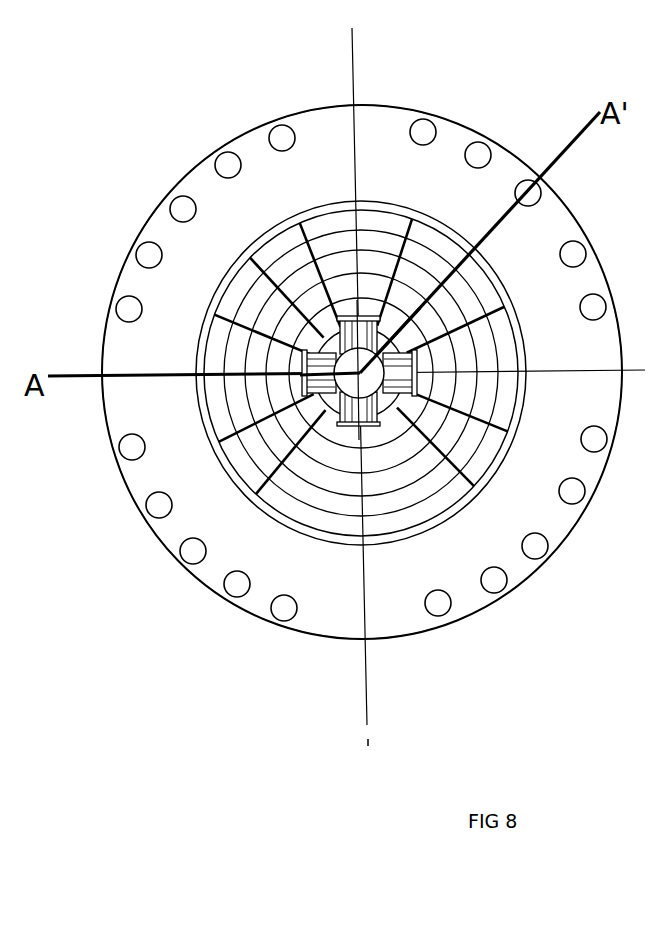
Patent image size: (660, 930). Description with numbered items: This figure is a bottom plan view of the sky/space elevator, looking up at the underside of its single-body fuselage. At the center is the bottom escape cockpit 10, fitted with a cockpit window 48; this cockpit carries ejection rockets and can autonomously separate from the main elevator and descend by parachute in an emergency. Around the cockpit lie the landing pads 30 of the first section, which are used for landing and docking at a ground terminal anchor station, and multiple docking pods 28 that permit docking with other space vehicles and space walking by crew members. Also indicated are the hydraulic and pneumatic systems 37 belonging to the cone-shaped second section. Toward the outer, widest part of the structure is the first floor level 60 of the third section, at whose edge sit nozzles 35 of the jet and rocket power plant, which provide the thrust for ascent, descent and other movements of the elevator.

The bottom escape cockpit 10 is at (255, 490).
The docking pods 28 is at (372, 388).
The landing pads 30 is at (522, 562).
The nozzle 35 is at (148, 522).
The hydraulic and pneumatic systems 37 is at (340, 412).
The cockpit window 48 is at (398, 503).
The first floor level 60 is at (180, 528).